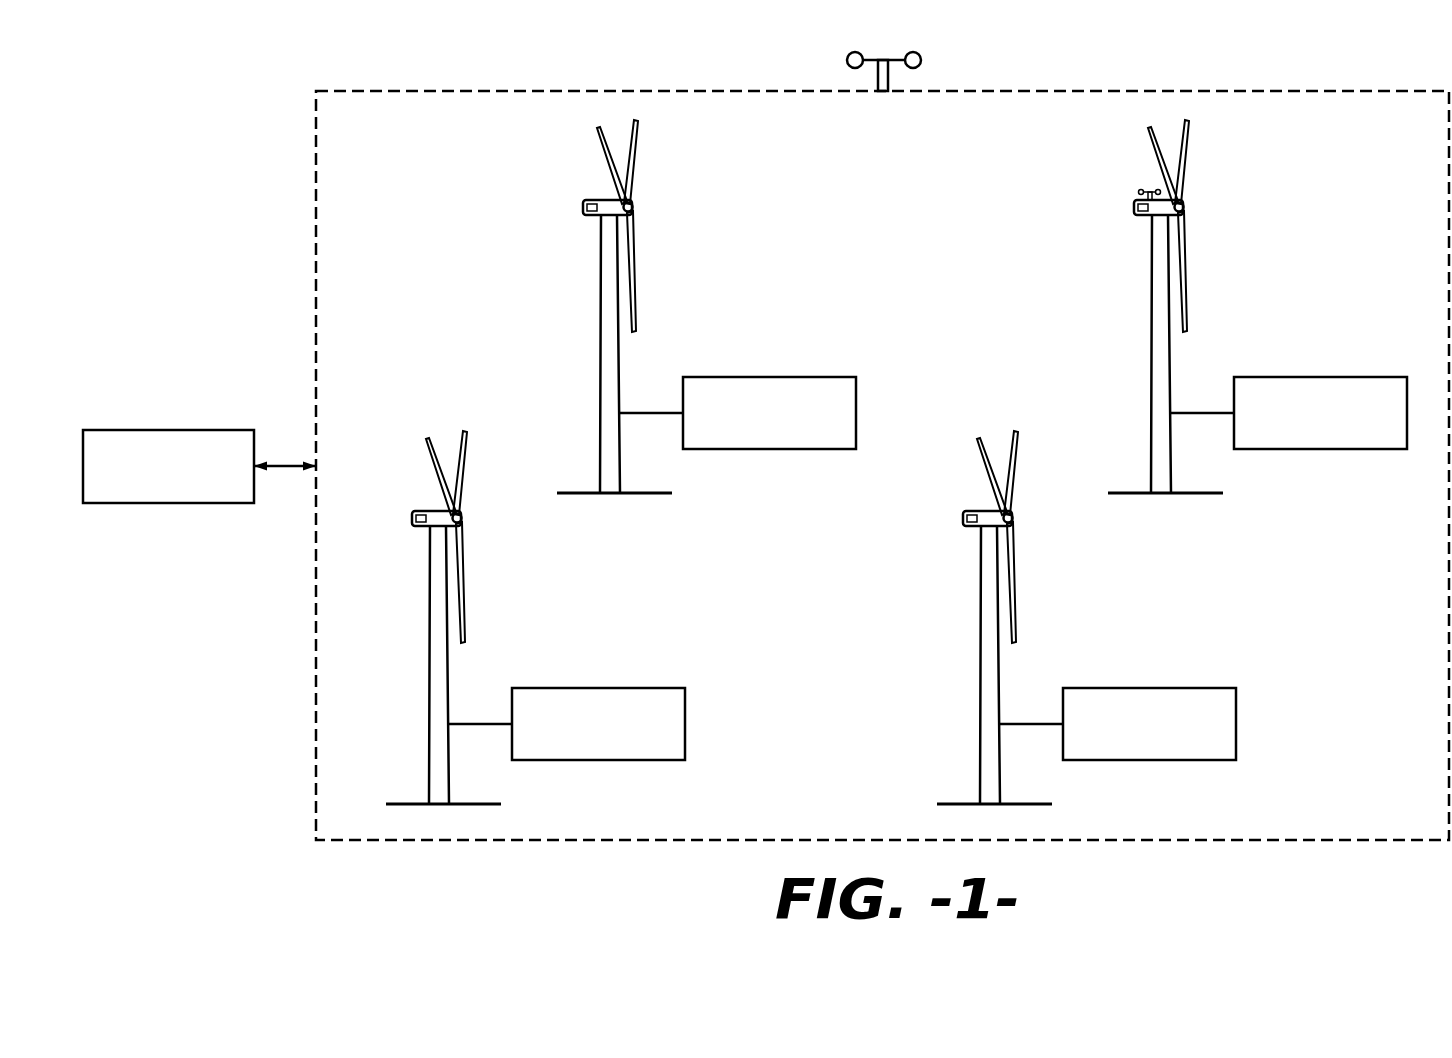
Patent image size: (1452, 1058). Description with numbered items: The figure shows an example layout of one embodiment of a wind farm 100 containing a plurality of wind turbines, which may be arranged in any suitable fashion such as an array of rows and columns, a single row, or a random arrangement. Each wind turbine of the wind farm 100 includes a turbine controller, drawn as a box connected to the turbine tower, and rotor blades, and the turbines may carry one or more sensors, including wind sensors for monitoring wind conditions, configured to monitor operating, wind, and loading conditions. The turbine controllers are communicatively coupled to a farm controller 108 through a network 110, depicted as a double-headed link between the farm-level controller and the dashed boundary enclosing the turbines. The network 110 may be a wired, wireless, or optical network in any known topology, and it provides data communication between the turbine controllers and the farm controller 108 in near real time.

The wind farm 100 is at (209, 147).
The farm controller 108 is at (147, 430).
The network 110 is at (280, 464).